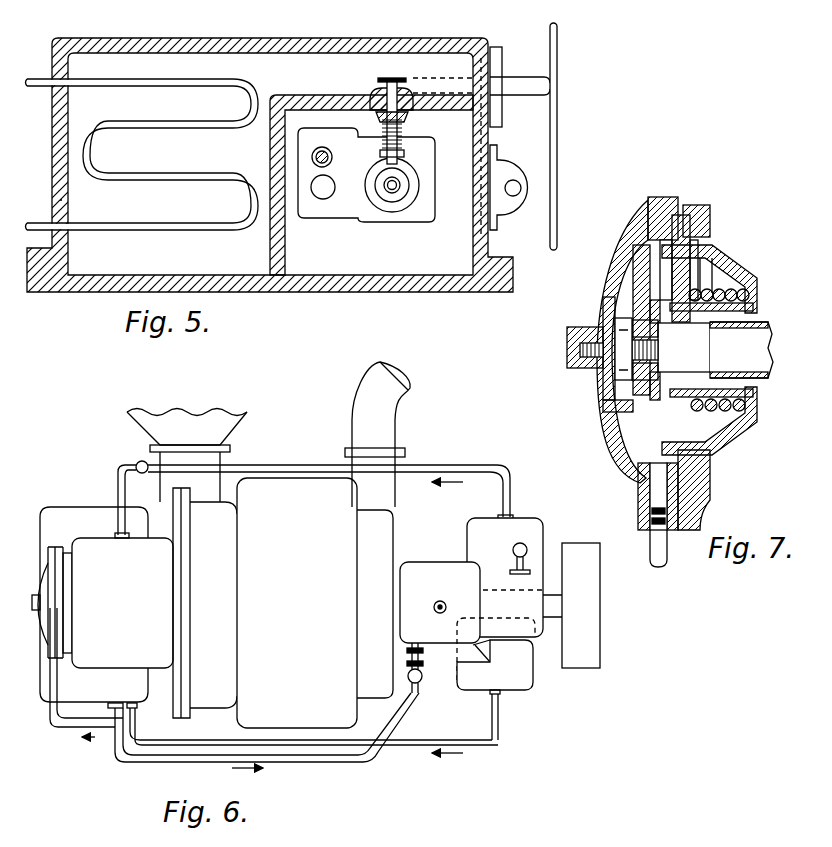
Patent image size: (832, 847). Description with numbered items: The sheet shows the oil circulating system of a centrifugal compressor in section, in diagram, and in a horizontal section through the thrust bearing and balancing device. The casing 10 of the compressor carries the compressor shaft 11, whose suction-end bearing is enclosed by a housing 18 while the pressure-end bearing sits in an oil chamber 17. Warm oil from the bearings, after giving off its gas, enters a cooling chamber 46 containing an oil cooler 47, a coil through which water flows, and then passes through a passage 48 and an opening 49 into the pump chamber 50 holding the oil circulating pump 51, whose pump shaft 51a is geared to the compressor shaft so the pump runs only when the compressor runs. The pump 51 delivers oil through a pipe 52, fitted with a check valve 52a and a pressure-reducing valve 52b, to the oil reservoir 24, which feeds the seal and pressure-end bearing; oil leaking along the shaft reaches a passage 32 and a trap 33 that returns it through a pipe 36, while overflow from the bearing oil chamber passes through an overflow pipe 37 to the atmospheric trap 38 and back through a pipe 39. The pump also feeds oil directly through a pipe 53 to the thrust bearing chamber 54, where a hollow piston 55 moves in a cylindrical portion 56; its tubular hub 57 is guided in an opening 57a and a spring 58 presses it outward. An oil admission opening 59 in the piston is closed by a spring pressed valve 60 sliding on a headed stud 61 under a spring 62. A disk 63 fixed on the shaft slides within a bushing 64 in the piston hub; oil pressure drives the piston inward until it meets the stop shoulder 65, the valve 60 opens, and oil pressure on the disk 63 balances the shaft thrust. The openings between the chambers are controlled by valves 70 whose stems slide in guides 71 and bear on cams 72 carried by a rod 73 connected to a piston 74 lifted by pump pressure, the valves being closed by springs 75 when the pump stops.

In FIG. 6, the casing 10 is at (315, 603).
In FIG. 7, the compressor shaft 11 is at (741, 350).
In FIG. 6, the compressor shaft 11 is at (553, 606).
In FIG. 6, the oil chamber 17 is at (495, 580).
In FIG. 6, the housing 18 is at (122, 603).
In FIG. 6, the oil reservoir 24 is at (440, 602).
In FIG. 6, the passage 32 is at (483, 656).
In FIG. 6, the trap 33 is at (495, 665).
In FIG. 6, the pipe 36 is at (490, 745).
In FIG. 6, the overflow pipe 37 is at (524, 560).
In FIG. 6, the atmospheric trap 38 is at (522, 528).
In FIG. 6, the pipe 39 is at (475, 455).
In FIG. 5, the cooling chamber 46 is at (130, 233).
In FIG. 5, the oil cooler 47 is at (178, 92).
In FIG. 5, the passage 48 is at (270, 165).
In FIG. 5, the opening 49 is at (386, 96).
In FIG. 5, the pump chamber 50 is at (379, 192).
In FIG. 5, the oil circulating pump 51 is at (340, 202).
In FIG. 5, the pump shaft 51a is at (332, 157).
In FIG. 5, the pipe 52 is at (520, 83).
In FIG. 6, the pipe 52 is at (312, 762).
In FIG. 6, the check valve 52a is at (407, 678).
In FIG. 6, the pressure-reducing valve 52b is at (407, 652).
In FIG. 5, the pipe 53 is at (558, 146).
In FIG. 7, the pipe 53 is at (668, 560).
In FIG. 6, the pipe 53 is at (68, 730).
In FIG. 7, the thrust bearing chamber 54 is at (617, 277).
In FIG. 6, the thrust bearing chamber 54 is at (44, 580).
In FIG. 7, the hollow piston 55 is at (690, 262).
In FIG. 7, the cylindrical portion 56 is at (746, 272).
In FIG. 7, the tubular hub 57 is at (750, 300).
In FIG. 7, the opening 57a is at (752, 403).
In FIG. 7, the spring 58 is at (748, 430).
In FIG. 7, the oil admission opening 59 is at (614, 385).
In FIG. 7, the spring pressed valve 60 is at (603, 306).
In FIG. 7, the headed stud 61 is at (578, 352).
In FIG. 7, the spring 62 is at (600, 372).
In FIG. 7, the disk 63 is at (636, 430).
In FIG. 7, the bushing 64 is at (676, 383).
In FIG. 6, the bushing 64 is at (439, 613).
In FIG. 7, the stop shoulder 65 is at (712, 449).
In FIG. 5, the valves 70 is at (396, 79).
In FIG. 5, the guides 71 is at (406, 118).
In FIG. 5, the cams 72 is at (406, 190).
In FIG. 5, the rod 73 is at (386, 195).
In FIG. 5, the piston 74 is at (404, 203).
In FIG. 5, the springs 75 is at (400, 146).